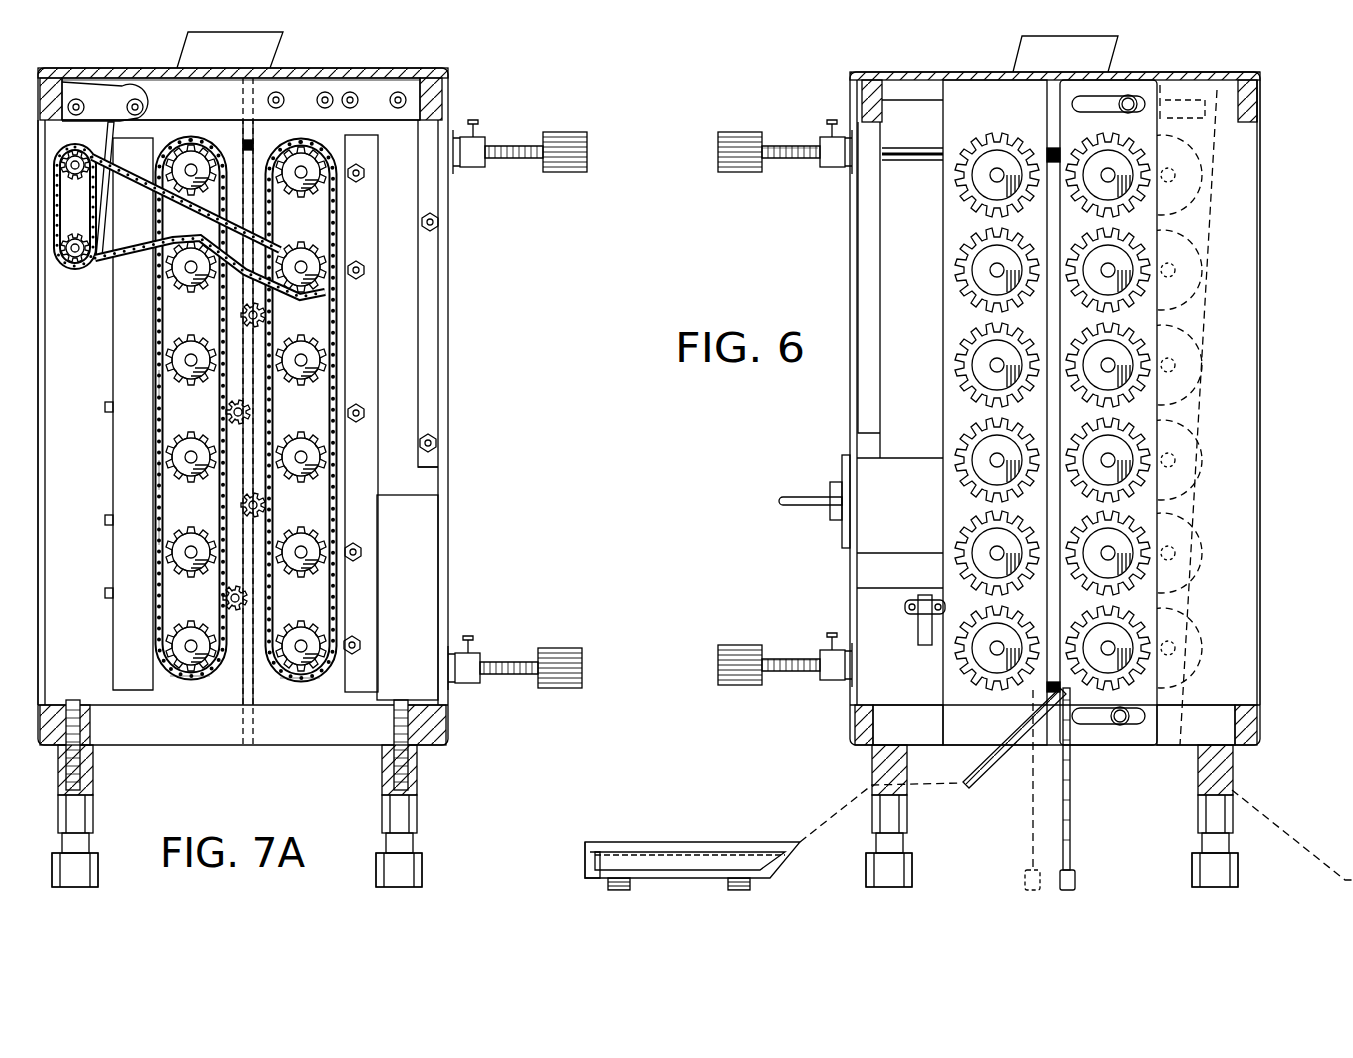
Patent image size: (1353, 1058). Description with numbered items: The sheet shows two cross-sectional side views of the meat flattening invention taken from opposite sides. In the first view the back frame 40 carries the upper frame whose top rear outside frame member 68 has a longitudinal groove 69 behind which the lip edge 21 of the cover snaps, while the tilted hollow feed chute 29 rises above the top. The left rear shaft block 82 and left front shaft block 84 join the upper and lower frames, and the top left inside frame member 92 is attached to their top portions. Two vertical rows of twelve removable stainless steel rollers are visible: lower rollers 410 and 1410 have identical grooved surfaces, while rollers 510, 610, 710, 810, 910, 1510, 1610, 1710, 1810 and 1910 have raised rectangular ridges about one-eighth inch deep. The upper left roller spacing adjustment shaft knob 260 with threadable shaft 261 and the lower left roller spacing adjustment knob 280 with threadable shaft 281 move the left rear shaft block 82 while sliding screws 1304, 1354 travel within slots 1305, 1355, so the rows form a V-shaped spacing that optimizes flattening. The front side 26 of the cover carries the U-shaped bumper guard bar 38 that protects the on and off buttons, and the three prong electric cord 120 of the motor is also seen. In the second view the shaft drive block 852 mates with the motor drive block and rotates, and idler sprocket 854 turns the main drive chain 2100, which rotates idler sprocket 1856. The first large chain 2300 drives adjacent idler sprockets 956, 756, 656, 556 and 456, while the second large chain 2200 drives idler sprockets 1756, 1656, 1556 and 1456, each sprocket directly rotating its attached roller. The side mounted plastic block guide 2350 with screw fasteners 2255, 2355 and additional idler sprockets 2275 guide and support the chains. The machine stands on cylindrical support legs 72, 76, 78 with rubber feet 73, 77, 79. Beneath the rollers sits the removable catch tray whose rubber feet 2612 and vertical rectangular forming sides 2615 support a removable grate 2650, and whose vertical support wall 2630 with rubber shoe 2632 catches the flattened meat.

In FIG. 6, the lip edge 21 is at (1258, 84).
In FIG. 7A, the front side 26 is at (445, 340).
In FIG. 6, the front side 26 is at (855, 243).
In FIG. 7A, the tilted hollow feed chute 29 is at (280, 54).
In FIG. 6, the tilted hollow feed chute 29 is at (1013, 56).
In FIG. 6, the U-shaped bumper guard bar 38 is at (800, 497).
In FIG. 7A, the back frame 40 is at (43, 512).
In FIG. 6, the back frame 40 is at (1262, 348).
In FIG. 6, the top rear outside frame member 68 is at (1240, 76).
In FIG. 6, the longitudinal groove 69 is at (1262, 96).
In FIG. 7A, the vertical frame cylindrical support leg 72 is at (420, 805).
In FIG. 6, the vertical frame cylindrical support leg 72 is at (890, 805).
In FIG. 7A, the rubber foot 73 is at (426, 872).
In FIG. 6, the rubber foot 73 is at (914, 870).
In FIG. 6, the vertical frame cylindrical support leg 76 is at (1234, 765).
In FIG. 6, the rubber foot 77 is at (1240, 870).
In FIG. 7A, the vertical frame cylindrical support leg 78 is at (90, 805).
In FIG. 7A, the rubber foot 79 is at (98, 872).
In FIG. 7A, the left rear shaft block 82 is at (170, 135).
In FIG. 6, the left rear shaft block 82 is at (1140, 128).
In FIG. 7A, the left front shaft block 84 is at (327, 130).
In FIG. 6, the left front shaft block 84 is at (955, 95).
In FIG. 7A, the top left inside frame member 92 is at (162, 80).
In FIG. 6, the three prong electric cord 120 is at (915, 622).
In FIG. 7A, the upper left roller spacing adjustment shaft knob 260 is at (555, 132).
In FIG. 6, the upper left roller spacing adjustment shaft knob 260 is at (740, 132).
In FIG. 6, the threadable shaft 261 is at (806, 166).
In FIG. 7A, the lower left roller spacing adjustment shaft knob 280 is at (550, 648).
In FIG. 6, the lower left roller spacing adjustment shaft knob 280 is at (740, 648).
In FIG. 6, the threadable shaft 281 is at (800, 660).
In FIG. 7A, the roller 410 is at (312, 640).
In FIG. 6, the roller 410 is at (996, 675).
In FIG. 7A, the idler sprocket 456 is at (330, 598).
In FIG. 7A, the roller 510 is at (320, 550).
In FIG. 6, the roller 510 is at (965, 538).
In FIG. 7A, the idler sprocket 556 is at (330, 522).
In FIG. 7A, the roller 610 is at (320, 447).
In FIG. 6, the roller 610 is at (965, 445).
In FIG. 7A, the idler sprocket 656 is at (340, 443).
In FIG. 7A, the roller 710 is at (320, 362).
In FIG. 6, the roller 710 is at (965, 350).
In FIG. 7A, the idler sprocket 756 is at (340, 372).
In FIG. 7A, the roller 810 is at (323, 262).
In FIG. 6, the roller 810 is at (965, 257).
In FIG. 7A, the shaft drive block 852 is at (330, 290).
In FIG. 7A, the idler sprocket 854 is at (330, 308).
In FIG. 7A, the roller 910 is at (307, 163).
In FIG. 6, the roller 910 is at (990, 150).
In FIG. 7A, the idler sprocket 956 is at (320, 195).
In FIG. 6, the sliding screw 1304 is at (1132, 98).
In FIG. 6, the slot 1305 is at (1095, 100).
In FIG. 6, the sliding screw 1354 is at (1122, 722).
In FIG. 6, the slot 1355 is at (1093, 726).
In FIG. 7A, the roller 1410 is at (178, 655).
In FIG. 6, the roller 1410 is at (1158, 658).
In FIG. 7A, the idler sprocket 1456 is at (185, 690).
In FIG. 7A, the roller 1510 is at (175, 553).
In FIG. 6, the roller 1510 is at (1158, 566).
In FIG. 7A, the idler sprocket 1556 is at (178, 523).
In FIG. 7A, the roller 1610 is at (178, 447).
In FIG. 6, the roller 1610 is at (1158, 475).
In FIG. 7A, the idler sprocket 1656 is at (160, 470).
In FIG. 7A, the roller 1710 is at (173, 347).
In FIG. 6, the roller 1710 is at (1155, 378).
In FIG. 7A, the idler sprocket 1756 is at (163, 378).
In FIG. 7A, the roller 1810 is at (173, 280).
In FIG. 6, the roller 1810 is at (1125, 290).
In FIG. 7A, the idler sprocket 1856 is at (170, 293).
In FIG. 7A, the roller 1910 is at (230, 142).
In FIG. 6, the roller 1910 is at (1125, 190).
In FIG. 7A, the main drive chain 2100 is at (71, 227).
In FIG. 7A, the second large chain 2200 is at (165, 690).
In FIG. 7A, the screw fastener 2255 is at (130, 607).
In FIG. 7A, the idler sprocket 2275 is at (245, 745).
In FIG. 7A, the first large chain 2300 is at (298, 690).
In FIG. 7A, the side mounted plastic block guide 2350 is at (360, 378).
In FIG. 7A, the screw fastener 2355 is at (360, 648).
In FIG. 6, the rubber feet 2612 is at (610, 885).
In FIG. 6, the vertical rectangular forming side 2615 is at (588, 855).
In FIG. 6, the vertical support wall 2630 is at (1072, 825).
In FIG. 6, the rubber shoe 2632 is at (1076, 882).
In FIG. 6, the removable grate 2650 is at (700, 848).